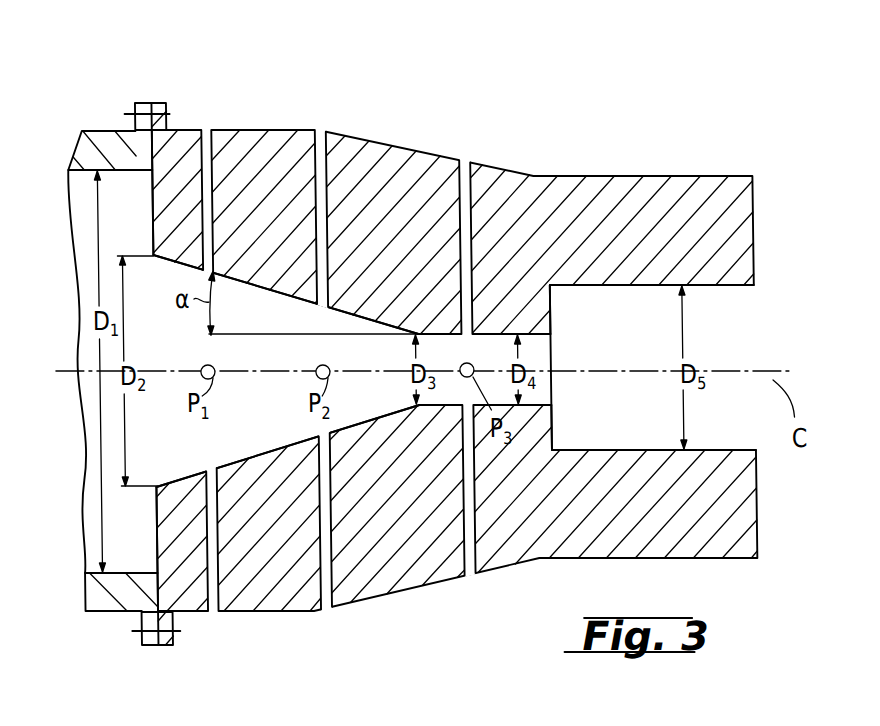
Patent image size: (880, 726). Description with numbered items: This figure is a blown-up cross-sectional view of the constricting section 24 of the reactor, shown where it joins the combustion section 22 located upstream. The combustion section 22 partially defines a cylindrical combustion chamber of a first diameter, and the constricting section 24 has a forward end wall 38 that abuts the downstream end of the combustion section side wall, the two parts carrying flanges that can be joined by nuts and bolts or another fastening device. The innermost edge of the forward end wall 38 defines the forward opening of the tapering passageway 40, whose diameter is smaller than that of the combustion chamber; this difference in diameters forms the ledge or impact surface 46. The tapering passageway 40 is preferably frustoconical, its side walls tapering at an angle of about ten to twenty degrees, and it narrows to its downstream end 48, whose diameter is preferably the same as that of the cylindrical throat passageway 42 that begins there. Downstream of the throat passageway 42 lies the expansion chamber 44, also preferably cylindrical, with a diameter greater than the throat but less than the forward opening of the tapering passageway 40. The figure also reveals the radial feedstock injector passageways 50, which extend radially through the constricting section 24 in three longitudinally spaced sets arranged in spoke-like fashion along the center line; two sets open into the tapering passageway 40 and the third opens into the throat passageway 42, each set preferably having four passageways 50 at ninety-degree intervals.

The combustion section 22 is at (100, 134).
The constricting section 24 is at (261, 611).
The forward end wall 38 is at (156, 198).
The tapering passageway 40 is at (276, 432).
The throat passageway 42 is at (534, 352).
The expansion chamber 44 is at (740, 320).
The impact surface 46 is at (155, 546).
The downstream end of tapering passageway 48 is at (416, 406).
The radial feedstock injector passageways 50 is at (209, 130).